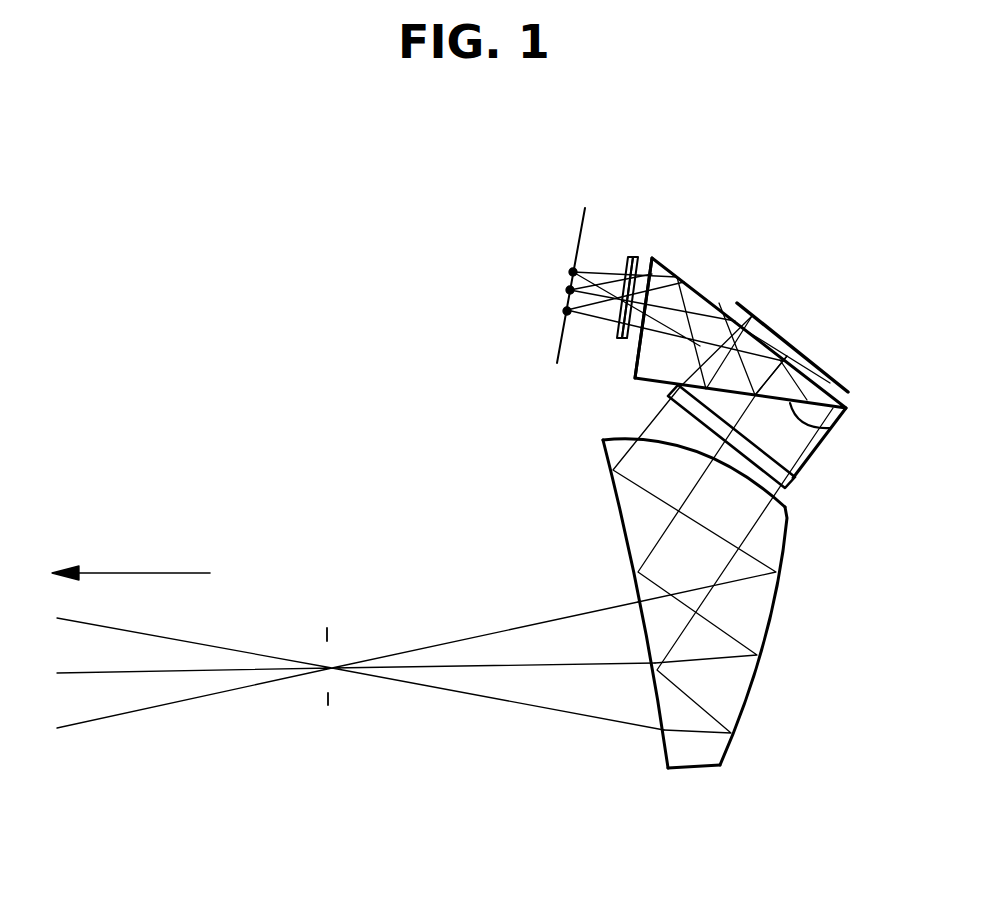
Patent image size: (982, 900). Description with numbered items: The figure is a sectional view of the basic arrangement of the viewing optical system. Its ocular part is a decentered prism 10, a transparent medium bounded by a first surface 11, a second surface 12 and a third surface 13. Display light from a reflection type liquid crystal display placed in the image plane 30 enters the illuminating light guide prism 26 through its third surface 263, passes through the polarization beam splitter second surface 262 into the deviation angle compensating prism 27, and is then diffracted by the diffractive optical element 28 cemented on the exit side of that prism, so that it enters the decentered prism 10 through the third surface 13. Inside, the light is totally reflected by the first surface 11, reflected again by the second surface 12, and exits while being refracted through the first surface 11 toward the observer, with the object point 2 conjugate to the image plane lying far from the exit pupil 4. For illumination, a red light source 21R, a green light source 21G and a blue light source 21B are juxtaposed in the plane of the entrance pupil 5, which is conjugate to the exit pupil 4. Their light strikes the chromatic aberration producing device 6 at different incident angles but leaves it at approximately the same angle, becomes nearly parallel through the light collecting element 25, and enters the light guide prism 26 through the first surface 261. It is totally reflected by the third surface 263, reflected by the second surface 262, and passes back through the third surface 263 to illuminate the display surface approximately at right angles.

The object point 2 is at (142, 555).
The exit pupil 4 is at (331, 660).
The entrance pupil 5 is at (581, 216).
The chromatic aberration producing device 6 is at (630, 257).
The decentered prism 10 is at (698, 595).
The first surface 11 is at (629, 553).
The second surface 12 is at (753, 683).
The third surface 13 is at (653, 444).
The B light source 21B is at (573, 272).
The G light source 21G is at (570, 290).
The R light source 21R is at (567, 311).
The light collecting element 25 is at (640, 257).
The illuminating light guide prism 26 is at (712, 368).
The first surface 261 is at (637, 352).
The second surface 262 is at (785, 459).
The third surface 263 is at (698, 293).
The deviation angle compensating prism 27 is at (808, 457).
The diffractive optical element 28 is at (788, 486).
The image plane 30 is at (783, 340).